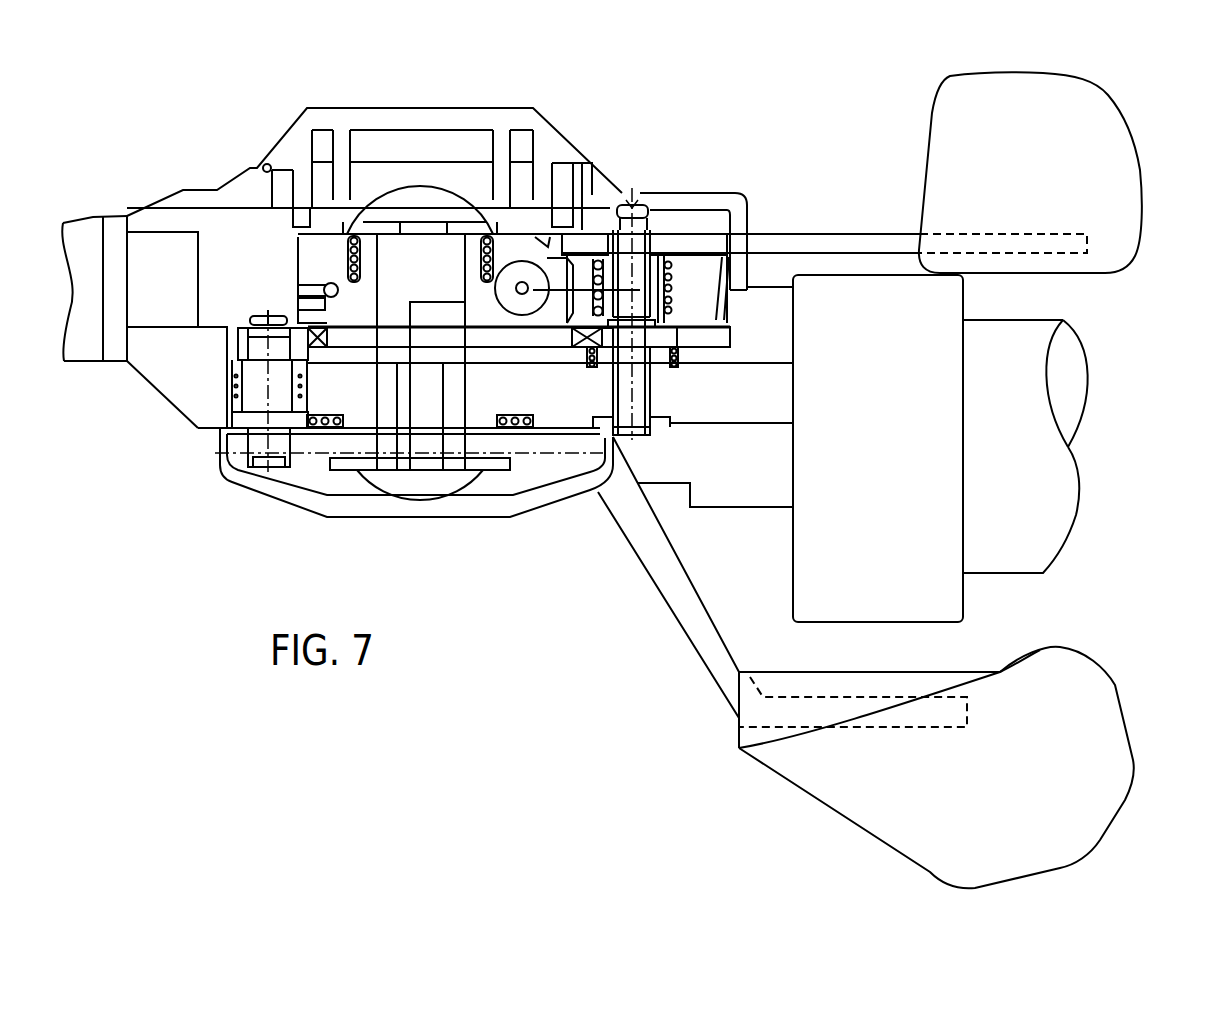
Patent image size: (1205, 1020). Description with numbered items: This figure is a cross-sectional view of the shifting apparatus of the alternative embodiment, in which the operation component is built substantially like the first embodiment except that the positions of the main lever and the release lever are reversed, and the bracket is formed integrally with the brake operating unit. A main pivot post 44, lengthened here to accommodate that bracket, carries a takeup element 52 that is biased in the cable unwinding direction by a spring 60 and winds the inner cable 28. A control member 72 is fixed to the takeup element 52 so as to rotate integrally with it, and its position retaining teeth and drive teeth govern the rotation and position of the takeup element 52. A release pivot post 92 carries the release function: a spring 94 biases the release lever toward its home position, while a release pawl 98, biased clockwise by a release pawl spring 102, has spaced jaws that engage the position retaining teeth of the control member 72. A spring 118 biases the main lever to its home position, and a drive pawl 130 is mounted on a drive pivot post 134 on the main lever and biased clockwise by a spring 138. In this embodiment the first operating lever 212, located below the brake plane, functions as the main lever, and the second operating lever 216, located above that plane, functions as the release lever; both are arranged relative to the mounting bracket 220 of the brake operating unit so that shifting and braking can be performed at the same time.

The inner cable 28 is at (325, 288).
The main pivot post 44 is at (427, 483).
The takeup element 52 is at (318, 253).
The spring 60 is at (357, 233).
The control member 72 is at (350, 338).
The release pivot post 92 is at (630, 197).
The spring 94 is at (670, 303).
The release pawl 98 is at (717, 337).
The release pawl spring 102 is at (680, 357).
The spring 118 is at (515, 428).
The drive pawl 130 is at (247, 330).
The drive pivot post 134 is at (260, 317).
The spring 138 is at (233, 393).
The first operating lever 212 is at (848, 823).
The second operating lever 216 is at (1097, 82).
The mounting bracket 220 is at (858, 452).